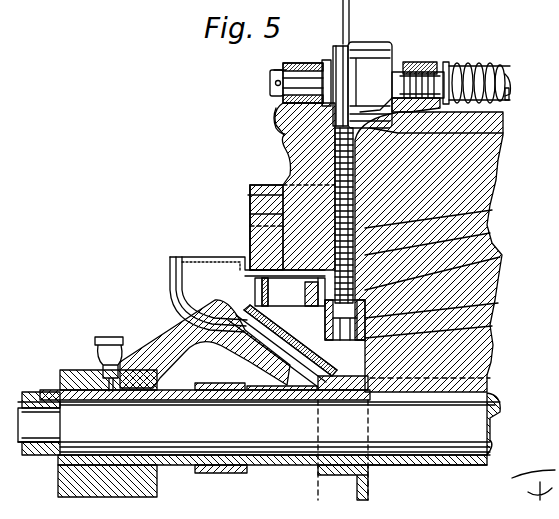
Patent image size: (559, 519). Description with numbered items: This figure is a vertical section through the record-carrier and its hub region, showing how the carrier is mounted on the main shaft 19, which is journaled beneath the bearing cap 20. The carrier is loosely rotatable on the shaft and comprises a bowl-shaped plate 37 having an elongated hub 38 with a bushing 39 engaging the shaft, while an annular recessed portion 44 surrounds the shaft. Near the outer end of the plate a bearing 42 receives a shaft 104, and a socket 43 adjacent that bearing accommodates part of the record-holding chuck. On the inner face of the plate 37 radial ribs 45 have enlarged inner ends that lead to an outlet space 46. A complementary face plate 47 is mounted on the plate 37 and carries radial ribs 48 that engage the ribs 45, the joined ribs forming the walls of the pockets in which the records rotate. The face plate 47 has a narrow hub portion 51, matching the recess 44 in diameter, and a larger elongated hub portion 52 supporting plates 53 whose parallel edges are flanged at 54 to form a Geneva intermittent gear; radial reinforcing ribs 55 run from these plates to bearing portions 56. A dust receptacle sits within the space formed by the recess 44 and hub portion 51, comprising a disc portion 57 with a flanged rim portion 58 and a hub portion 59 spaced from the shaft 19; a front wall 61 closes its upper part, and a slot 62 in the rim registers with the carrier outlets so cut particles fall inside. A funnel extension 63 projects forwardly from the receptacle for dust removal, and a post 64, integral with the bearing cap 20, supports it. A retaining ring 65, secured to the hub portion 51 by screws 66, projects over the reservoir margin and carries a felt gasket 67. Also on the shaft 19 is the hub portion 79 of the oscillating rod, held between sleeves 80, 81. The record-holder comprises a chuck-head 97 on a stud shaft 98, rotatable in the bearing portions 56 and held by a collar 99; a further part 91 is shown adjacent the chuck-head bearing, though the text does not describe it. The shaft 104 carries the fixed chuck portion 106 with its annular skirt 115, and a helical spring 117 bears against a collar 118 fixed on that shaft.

The main shaft 19 is at (259, 446).
The bearing cap 20 is at (72, 372).
The bowl-shaped plate 37 is at (505, 160).
The elongated hub 38 is at (490, 372).
The bushing 39 is at (430, 467).
The bearing 42 is at (420, 67).
The socket 43 is at (503, 131).
The annular recessed portion 44 is at (492, 326).
The radial rib 45 is at (492, 210).
The outlet space 46 is at (490, 233).
The complementary face plate 47 is at (285, 182).
The radial rib 48 is at (300, 165).
The hub portion 51 is at (252, 268).
The elongated hub portion 52 is at (248, 208).
The plate 53 is at (250, 226).
The flange 54 is at (250, 214).
The radial reinforcing rib 55 is at (249, 190).
The bearing portion 56 is at (300, 65).
The disc portion 57 is at (370, 402).
The flanged rim portion 58 is at (500, 257).
The hub portion 59 is at (320, 400).
The front wall 61 is at (280, 399).
The slot 62 is at (498, 303).
The chute 63 is at (178, 273).
The post 64 is at (160, 345).
The retaining ring 65 is at (325, 297).
The screw 66 is at (250, 288).
The annular insert or gasket 67 is at (272, 326).
The hub portion 79 is at (206, 386).
The sleeve 80 is at (196, 372).
The sleeve 81 is at (280, 388).
The boss 91 is at (273, 120).
The chuck-head 97 is at (337, 48).
The stud shaft 98 is at (270, 80).
The collar 99 is at (277, 68).
The shaft 104 is at (510, 82).
The portion 106 is at (388, 56).
The annular skirt 115 is at (376, 50).
The helical spring 117 is at (478, 70).
The collar 118 is at (448, 66).